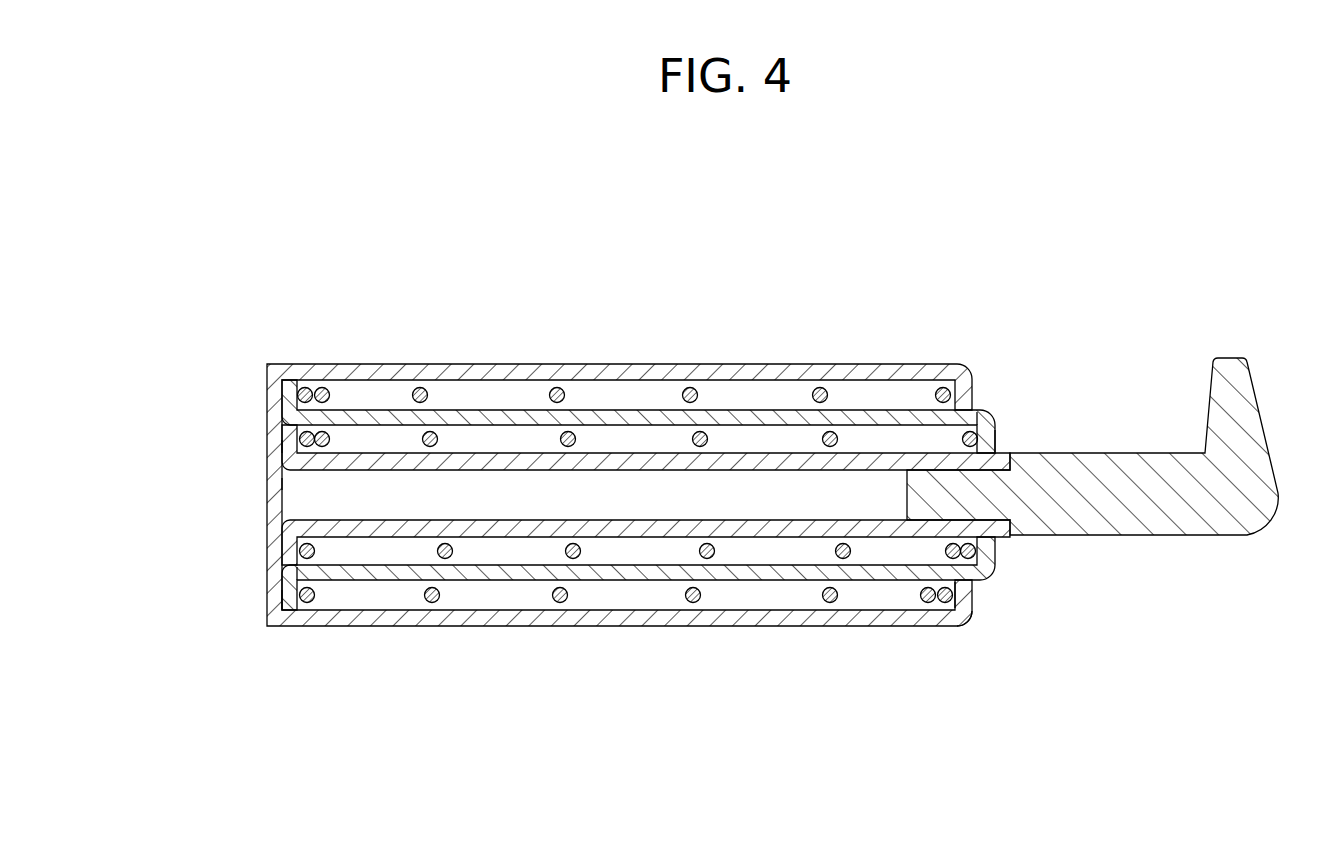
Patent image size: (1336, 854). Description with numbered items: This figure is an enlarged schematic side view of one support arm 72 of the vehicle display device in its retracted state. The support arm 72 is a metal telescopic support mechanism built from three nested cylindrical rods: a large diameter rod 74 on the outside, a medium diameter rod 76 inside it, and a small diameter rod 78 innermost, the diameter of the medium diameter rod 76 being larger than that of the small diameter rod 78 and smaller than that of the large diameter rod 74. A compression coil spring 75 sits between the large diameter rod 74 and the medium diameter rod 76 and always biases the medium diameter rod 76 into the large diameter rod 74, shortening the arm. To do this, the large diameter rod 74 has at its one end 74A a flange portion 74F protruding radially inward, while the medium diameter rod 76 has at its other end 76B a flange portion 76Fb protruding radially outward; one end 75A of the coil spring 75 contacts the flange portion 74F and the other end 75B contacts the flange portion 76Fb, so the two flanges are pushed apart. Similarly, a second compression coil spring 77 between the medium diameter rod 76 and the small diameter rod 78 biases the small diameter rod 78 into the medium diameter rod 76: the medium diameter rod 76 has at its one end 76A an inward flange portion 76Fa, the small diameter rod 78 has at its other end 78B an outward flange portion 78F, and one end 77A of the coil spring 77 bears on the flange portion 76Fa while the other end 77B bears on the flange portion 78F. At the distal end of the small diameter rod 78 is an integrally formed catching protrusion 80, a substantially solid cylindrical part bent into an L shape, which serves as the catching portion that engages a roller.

The support arm 72 is at (636, 495).
The large diameter rod 74 is at (678, 537).
The flange portion 74F is at (973, 593).
The one end 74A is at (958, 617).
The compression coil spring 75 is at (645, 665).
The one end 75A is at (942, 630).
The other end 75B is at (315, 600).
The medium diameter rod 76 is at (636, 535).
The one end 76A is at (995, 410).
The other end 76B is at (283, 565).
The flange portion 76Fa is at (993, 447).
The flange portion 76Fb is at (293, 612).
The compression coil spring 77 is at (595, 368).
The one end 77A is at (972, 413).
The other end 77B is at (267, 420).
The small diameter rod 78 is at (560, 567).
The flange portion 78F is at (285, 450).
The other end 78B is at (277, 483).
The catching protrusion 80 is at (1233, 367).